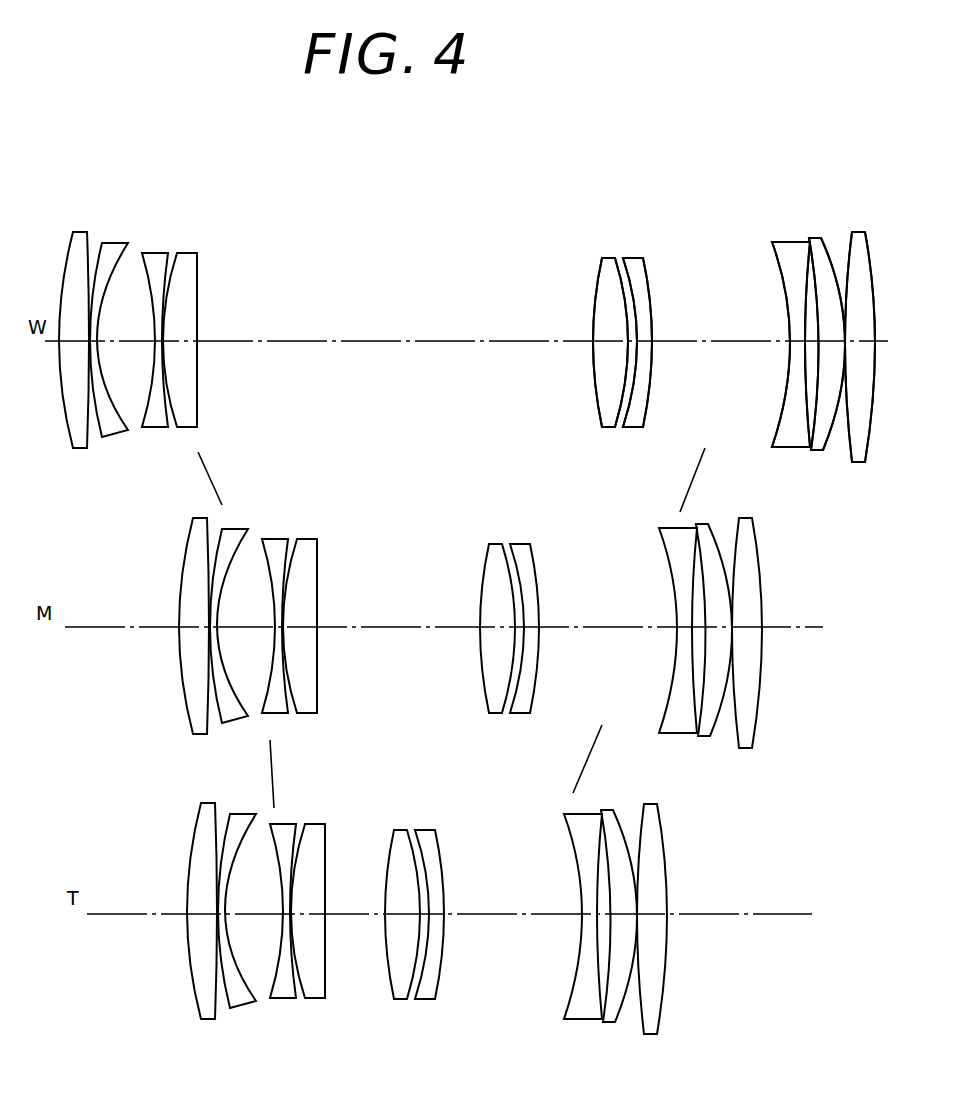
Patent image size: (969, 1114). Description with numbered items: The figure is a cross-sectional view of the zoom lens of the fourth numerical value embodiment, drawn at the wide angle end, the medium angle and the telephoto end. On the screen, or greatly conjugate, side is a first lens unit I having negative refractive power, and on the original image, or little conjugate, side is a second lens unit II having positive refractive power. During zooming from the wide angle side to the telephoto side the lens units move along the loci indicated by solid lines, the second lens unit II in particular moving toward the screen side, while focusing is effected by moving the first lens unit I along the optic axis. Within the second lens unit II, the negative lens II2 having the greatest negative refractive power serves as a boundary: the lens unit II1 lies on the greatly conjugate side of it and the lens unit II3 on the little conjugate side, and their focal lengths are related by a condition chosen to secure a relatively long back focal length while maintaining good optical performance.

The first lens unit I is at (212, 219).
The second lens unit II is at (855, 170).
The lens unit on the greatly conjugate side in the second lens unit II1 is at (643, 235).
The negative lens of the greatest negative refractive power II2 is at (802, 235).
The lens unit on the little conjugate side in the second lens unit II3 is at (872, 235).